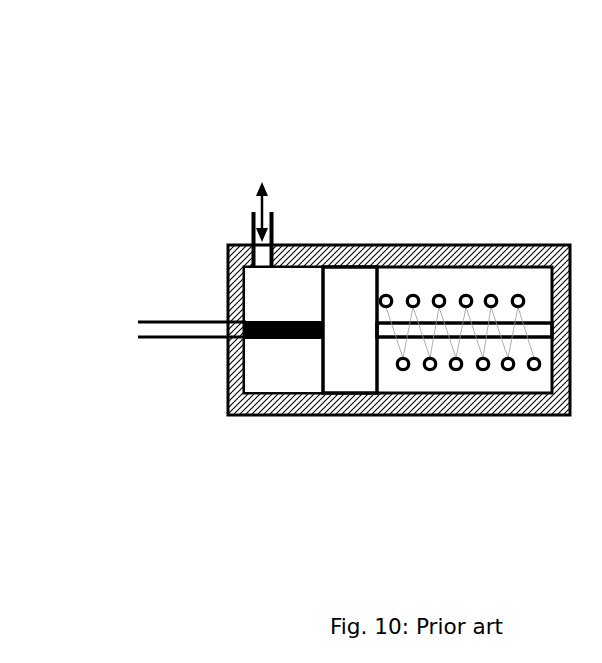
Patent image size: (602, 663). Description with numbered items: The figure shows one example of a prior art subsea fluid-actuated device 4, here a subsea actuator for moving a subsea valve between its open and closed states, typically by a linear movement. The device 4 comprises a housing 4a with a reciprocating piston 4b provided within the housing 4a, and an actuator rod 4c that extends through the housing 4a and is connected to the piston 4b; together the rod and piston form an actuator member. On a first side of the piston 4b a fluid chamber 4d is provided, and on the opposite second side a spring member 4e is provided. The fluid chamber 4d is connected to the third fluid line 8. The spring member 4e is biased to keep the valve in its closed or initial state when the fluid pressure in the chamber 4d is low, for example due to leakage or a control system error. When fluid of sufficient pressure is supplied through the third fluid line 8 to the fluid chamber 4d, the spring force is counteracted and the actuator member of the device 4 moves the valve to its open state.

The device 4 is at (99, 83).
The housing 4a is at (467, 260).
The piston 4b is at (352, 288).
The actuator rod 4c is at (178, 332).
The fluid chamber 4d is at (281, 370).
The spring member 4e is at (460, 370).
The third fluid line 8 is at (262, 205).